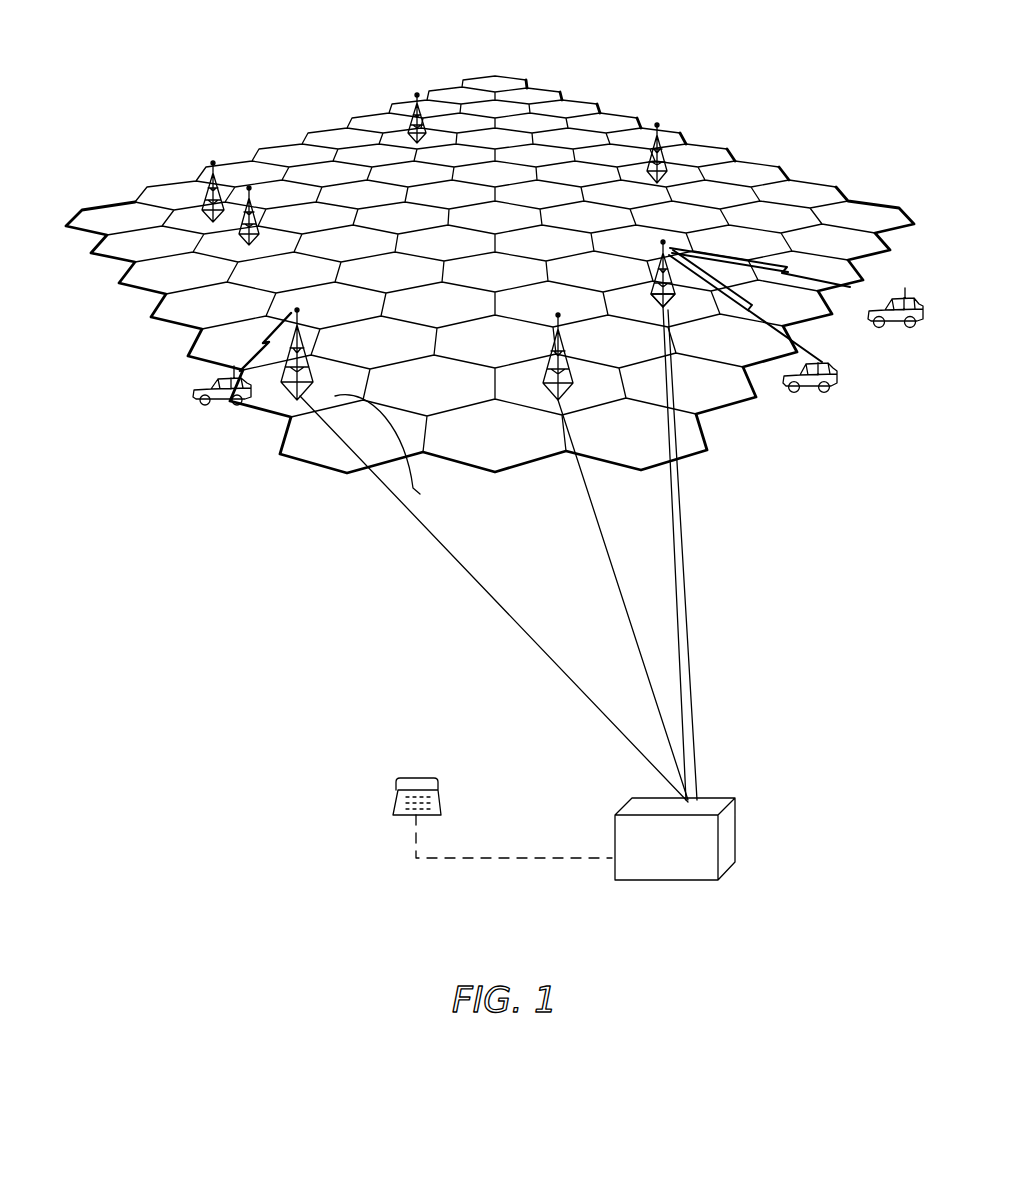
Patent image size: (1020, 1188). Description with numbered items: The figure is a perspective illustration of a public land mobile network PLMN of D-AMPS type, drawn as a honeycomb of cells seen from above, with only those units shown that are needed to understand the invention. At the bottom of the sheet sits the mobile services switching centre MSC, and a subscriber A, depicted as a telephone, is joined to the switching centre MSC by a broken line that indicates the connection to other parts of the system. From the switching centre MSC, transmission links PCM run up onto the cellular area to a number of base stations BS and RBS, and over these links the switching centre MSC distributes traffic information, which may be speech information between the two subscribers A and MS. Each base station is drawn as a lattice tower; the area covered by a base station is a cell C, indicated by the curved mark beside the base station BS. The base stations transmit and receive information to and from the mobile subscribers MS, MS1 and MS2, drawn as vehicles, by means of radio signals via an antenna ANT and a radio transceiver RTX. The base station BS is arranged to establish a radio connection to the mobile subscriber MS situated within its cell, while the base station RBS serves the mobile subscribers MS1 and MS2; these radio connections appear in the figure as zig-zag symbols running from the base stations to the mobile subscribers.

The public land mobile network PLMN is at (290, 108).
The base station BS is at (284, 393).
The antenna ANT is at (283, 302).
The mobile subscriber MS is at (193, 390).
The cell C is at (386, 451).
The transmission link PCM is at (446, 582).
The radio transceiver antenna RTX is at (666, 244).
The radio base station RBS is at (676, 313).
The mobile subscriber MS2 is at (817, 394).
The mobile subscriber MS1 is at (905, 330).
The mobile services switching centre MSC is at (722, 803).
The subscriber A is at (445, 788).